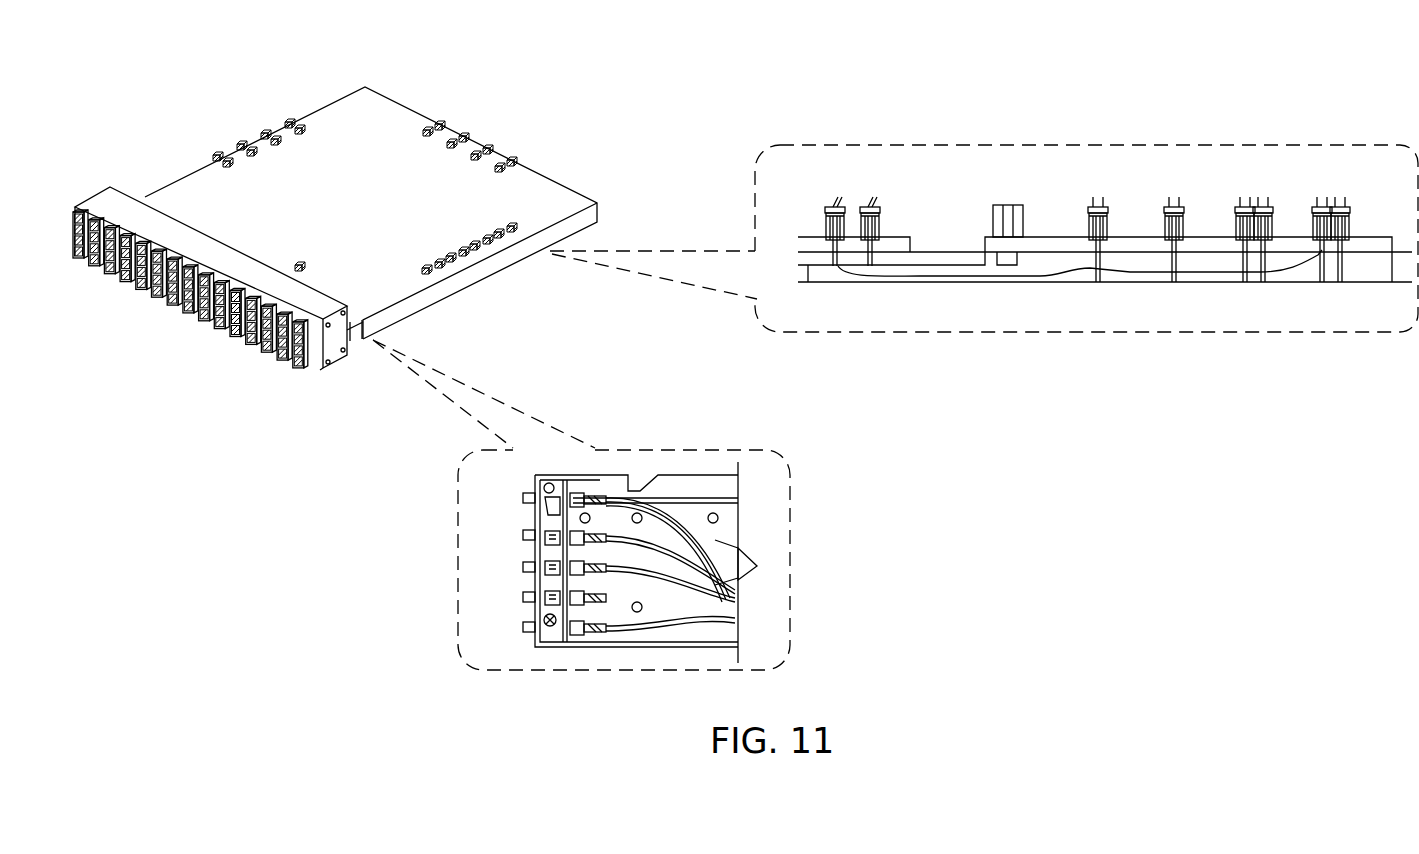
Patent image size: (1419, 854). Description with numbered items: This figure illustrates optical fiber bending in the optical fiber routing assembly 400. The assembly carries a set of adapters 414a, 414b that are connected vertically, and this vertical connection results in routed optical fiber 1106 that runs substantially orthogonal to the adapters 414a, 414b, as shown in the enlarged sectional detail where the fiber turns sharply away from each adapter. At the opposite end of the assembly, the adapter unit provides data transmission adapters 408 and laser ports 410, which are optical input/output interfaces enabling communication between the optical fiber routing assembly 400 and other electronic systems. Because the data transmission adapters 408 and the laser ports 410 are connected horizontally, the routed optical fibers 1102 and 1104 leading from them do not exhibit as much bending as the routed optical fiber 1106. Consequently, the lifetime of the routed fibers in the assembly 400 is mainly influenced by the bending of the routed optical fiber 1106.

The optical fiber routing assembly 400 is at (248, 68).
The adapter 414a is at (838, 197).
The adapter 414b is at (870, 197).
The routed optical fiber 1106 is at (1220, 283).
The routed optical fiber 1102 is at (746, 602).
The routed optical fiber 1104 is at (698, 516).
The laser port 410 is at (527, 500).
The data transmission adapter 408 is at (527, 565).